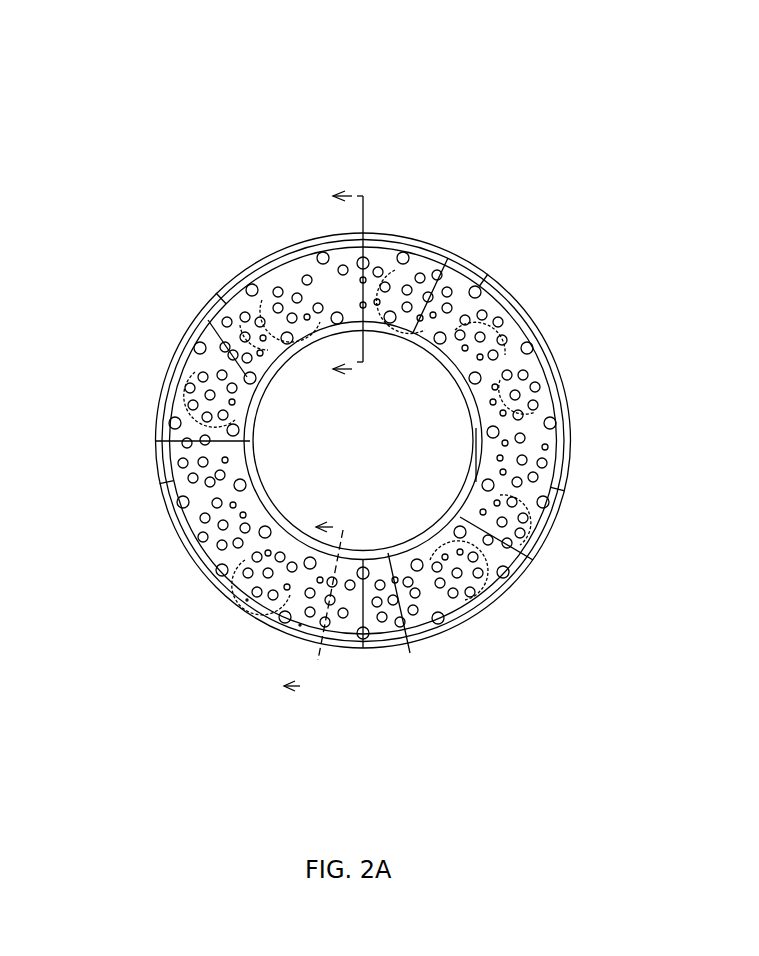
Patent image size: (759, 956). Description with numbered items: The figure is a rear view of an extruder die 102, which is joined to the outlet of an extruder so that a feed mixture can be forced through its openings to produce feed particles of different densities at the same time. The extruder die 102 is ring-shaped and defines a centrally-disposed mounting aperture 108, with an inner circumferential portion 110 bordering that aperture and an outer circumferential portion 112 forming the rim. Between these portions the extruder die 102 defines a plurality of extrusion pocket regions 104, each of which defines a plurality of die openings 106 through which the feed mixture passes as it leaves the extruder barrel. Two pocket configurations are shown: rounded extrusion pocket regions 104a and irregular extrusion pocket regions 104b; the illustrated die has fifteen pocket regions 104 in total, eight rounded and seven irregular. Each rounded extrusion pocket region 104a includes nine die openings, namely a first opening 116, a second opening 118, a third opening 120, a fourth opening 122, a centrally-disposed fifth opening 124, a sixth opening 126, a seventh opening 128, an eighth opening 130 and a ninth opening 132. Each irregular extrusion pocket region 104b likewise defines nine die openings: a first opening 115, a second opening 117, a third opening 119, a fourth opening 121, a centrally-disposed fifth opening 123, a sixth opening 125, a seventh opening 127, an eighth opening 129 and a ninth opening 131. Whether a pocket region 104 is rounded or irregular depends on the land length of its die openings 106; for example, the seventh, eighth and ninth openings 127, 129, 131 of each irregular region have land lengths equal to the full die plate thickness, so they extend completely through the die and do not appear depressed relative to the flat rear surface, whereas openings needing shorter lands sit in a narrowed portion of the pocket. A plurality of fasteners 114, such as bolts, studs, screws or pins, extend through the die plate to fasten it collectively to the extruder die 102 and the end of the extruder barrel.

The extruder die 102 is at (91, 125).
The extrusion pocket regions 104 is at (300, 625).
The rounded extrusion pocket region 104a is at (283, 285).
The irregular extrusion pocket region 104b is at (508, 320).
The die openings 106 is at (207, 417).
The mounting aperture 108 is at (378, 443).
The inner circumferential portion 110 is at (435, 347).
The outer circumferential portion 112 is at (427, 253).
The fasteners 114 is at (337, 318).
The first opening 115 is at (542, 463).
The first opening 116 is at (203, 537).
The second opening 117 is at (533, 477).
The second opening 118 is at (205, 518).
The third opening 119 is at (545, 447).
The third opening 120 is at (222, 545).
The fourth opening 121 is at (517, 482).
The fourth opening 122 is at (217, 503).
The fifth opening 123 is at (522, 460).
The fifth opening 124 is at (223, 525).
The sixth opening 125 is at (523, 438).
The sixth opening 126 is at (238, 543).
The seventh opening 127 is at (505, 443).
The seventh opening 128 is at (245, 528).
The eighth opening 129 is at (503, 472).
The eighth opening 130 is at (233, 505).
The ninth opening 131 is at (500, 458).
The ninth opening 132 is at (243, 515).